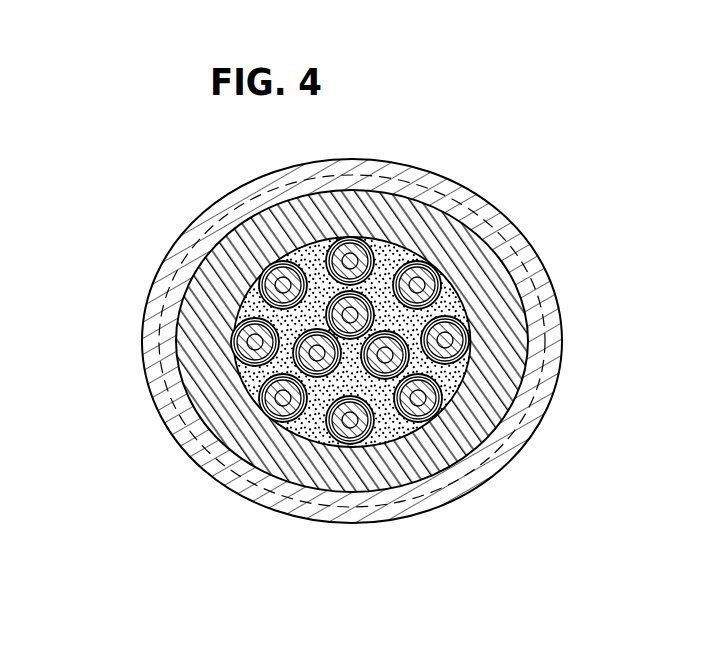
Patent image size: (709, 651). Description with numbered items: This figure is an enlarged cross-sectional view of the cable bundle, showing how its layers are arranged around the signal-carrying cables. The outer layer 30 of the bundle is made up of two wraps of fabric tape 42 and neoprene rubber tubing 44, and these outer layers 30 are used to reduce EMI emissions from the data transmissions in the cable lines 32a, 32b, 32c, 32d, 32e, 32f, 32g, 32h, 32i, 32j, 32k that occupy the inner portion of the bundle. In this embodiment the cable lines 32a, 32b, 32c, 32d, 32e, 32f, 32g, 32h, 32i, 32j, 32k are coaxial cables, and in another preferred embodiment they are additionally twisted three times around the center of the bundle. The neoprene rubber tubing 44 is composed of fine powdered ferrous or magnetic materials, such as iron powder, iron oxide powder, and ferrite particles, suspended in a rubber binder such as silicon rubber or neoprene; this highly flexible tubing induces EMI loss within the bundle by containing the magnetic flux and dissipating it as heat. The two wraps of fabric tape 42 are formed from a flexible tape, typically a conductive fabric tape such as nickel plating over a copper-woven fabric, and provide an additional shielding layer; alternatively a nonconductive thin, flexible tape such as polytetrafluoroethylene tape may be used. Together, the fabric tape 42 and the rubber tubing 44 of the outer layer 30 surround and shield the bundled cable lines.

The outer layer 30 is at (572, 368).
The fabric tape 42 is at (500, 230).
The neoprene rubber tubing 44 is at (510, 303).
The cable line 32a is at (333, 247).
The cable line 32b is at (419, 262).
The cable line 32c is at (466, 297).
The cable line 32d is at (455, 420).
The cable line 32e is at (347, 440).
The cable line 32f is at (270, 421).
The cable line 32g is at (247, 323).
The cable line 32h is at (272, 272).
The cable line 32i is at (372, 292).
The cable line 32j is at (384, 380).
The cable line 32k is at (261, 383).